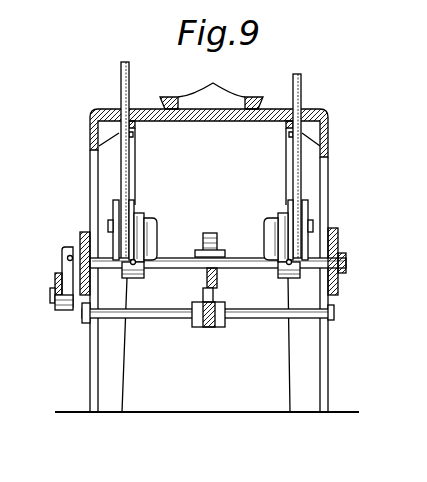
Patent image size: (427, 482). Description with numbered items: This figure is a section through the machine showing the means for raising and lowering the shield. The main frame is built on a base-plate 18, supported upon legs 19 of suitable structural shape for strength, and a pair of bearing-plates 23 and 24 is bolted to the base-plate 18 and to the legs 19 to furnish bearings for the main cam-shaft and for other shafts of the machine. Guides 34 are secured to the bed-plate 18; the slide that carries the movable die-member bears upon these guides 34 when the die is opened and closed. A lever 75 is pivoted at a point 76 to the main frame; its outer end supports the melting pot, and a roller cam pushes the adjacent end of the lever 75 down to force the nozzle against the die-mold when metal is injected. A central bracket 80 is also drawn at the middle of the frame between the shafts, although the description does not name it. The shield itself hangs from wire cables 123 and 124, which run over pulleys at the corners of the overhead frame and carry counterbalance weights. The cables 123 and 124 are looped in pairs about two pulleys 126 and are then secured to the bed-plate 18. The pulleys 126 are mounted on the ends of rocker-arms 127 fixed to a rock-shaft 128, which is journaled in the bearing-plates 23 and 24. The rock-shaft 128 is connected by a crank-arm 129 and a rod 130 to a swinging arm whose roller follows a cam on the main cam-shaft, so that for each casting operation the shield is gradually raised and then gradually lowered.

The base-plate 18 is at (329, 112).
The legs 19 is at (90, 168).
The bearing-plate 23 is at (84, 232).
The bearing-plate 24 is at (338, 242).
The guides 34 is at (224, 93).
The lever 75 is at (207, 328).
The pivot point 76 is at (150, 320).
The bracket 80 is at (218, 280).
The wire cable 123 is at (129, 72).
The wire cable 124 is at (121, 89).
The pulleys 126 is at (131, 203).
The rocker-arms 127 is at (152, 225).
The rock-shaft 128 is at (346, 265).
The crank-arm 129 is at (64, 311).
The rod 130 is at (55, 283).